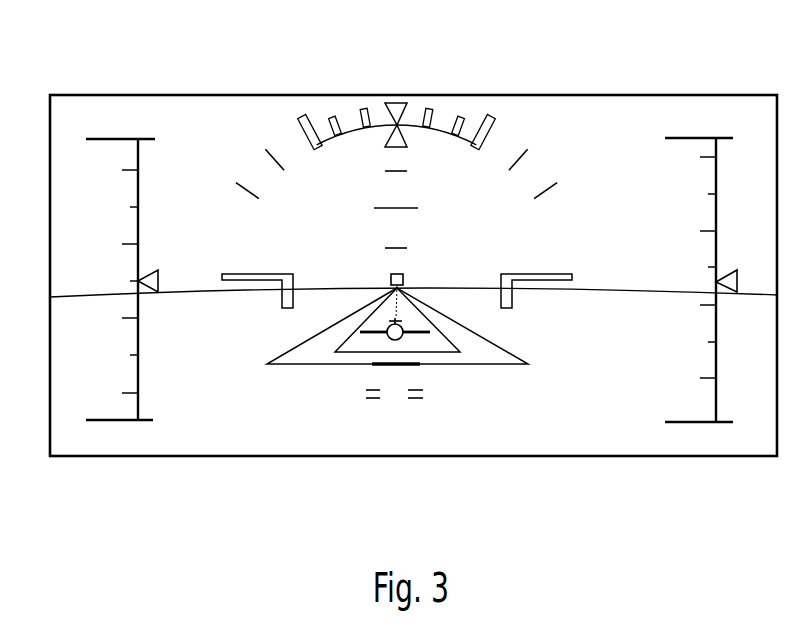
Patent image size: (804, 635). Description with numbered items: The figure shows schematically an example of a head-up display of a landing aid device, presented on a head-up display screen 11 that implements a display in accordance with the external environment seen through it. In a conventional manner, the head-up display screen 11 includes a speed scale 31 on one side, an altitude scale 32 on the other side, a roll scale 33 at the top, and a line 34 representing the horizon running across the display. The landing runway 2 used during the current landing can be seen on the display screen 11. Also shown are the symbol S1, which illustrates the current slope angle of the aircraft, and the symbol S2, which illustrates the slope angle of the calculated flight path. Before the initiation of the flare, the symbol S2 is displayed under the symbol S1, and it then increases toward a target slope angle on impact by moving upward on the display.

The landing runway 2 is at (459, 365).
The head-up display screen 11 is at (598, 456).
The speed scale 31 is at (112, 120).
The altitude scale 32 is at (697, 120).
The roll scale 33 is at (325, 102).
The line representing the horizon 34 is at (171, 305).
The symbol illustrating the current slope angle S1 is at (386, 334).
The symbol illustrating the slope angle of the flight path S2 is at (350, 400).